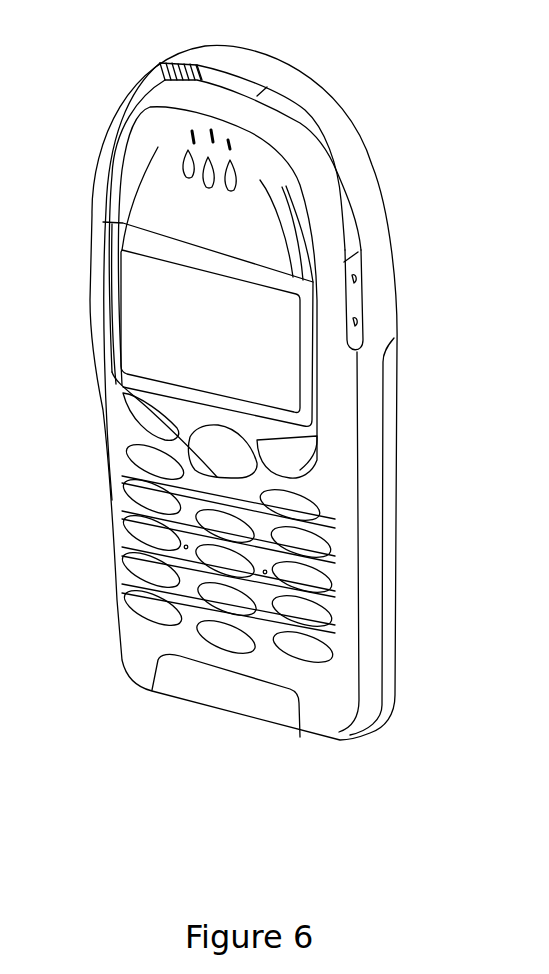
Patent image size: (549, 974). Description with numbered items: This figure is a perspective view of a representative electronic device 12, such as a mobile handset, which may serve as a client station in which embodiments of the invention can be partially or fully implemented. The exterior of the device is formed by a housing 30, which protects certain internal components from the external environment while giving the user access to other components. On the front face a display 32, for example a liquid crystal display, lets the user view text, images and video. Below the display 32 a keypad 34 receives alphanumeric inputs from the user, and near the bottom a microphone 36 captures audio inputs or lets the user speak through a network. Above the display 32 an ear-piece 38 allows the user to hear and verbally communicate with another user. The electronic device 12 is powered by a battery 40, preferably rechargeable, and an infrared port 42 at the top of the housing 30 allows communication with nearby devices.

The electronic device 12 is at (260, 398).
The housing 30 is at (369, 194).
The display 32 is at (284, 371).
The keypad 34 is at (302, 652).
The microphone 36 is at (174, 688).
The ear-piece 38 is at (190, 153).
The battery 40 is at (396, 636).
The infrared port 42 is at (224, 82).